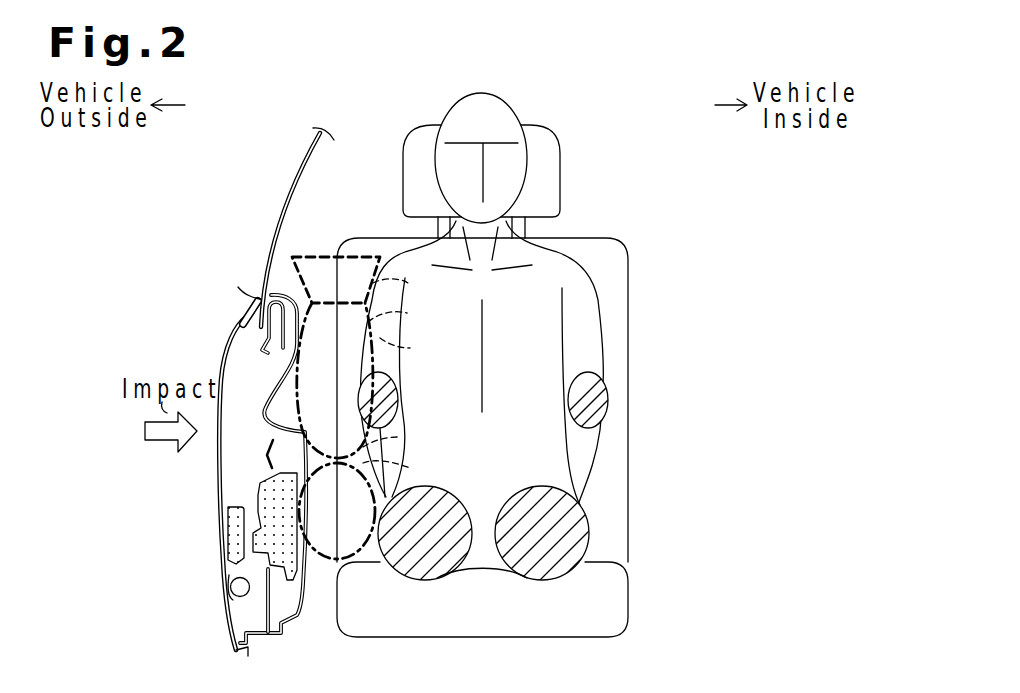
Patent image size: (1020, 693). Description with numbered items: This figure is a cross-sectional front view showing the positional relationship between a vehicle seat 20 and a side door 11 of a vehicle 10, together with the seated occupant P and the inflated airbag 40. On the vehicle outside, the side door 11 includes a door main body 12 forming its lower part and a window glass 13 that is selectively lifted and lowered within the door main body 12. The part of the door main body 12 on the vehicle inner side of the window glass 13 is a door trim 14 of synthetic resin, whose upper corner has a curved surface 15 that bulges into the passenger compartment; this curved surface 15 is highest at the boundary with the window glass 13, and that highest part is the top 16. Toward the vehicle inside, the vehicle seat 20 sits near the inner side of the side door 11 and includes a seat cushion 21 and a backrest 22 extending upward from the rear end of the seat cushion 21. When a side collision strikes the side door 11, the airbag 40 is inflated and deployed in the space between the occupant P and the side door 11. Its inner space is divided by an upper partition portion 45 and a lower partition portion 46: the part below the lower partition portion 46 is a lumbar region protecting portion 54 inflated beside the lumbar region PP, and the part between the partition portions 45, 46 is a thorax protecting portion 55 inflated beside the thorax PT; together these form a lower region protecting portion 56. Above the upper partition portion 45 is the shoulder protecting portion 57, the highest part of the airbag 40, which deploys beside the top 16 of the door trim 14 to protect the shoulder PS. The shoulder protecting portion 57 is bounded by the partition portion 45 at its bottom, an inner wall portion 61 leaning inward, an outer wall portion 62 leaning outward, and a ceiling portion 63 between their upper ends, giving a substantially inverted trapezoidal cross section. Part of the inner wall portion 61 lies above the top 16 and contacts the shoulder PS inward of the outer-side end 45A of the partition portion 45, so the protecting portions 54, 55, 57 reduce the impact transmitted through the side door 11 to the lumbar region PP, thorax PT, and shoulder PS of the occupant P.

The vehicle 10 is at (231, 396).
The side door 11 is at (210, 396).
The door main body 12 is at (220, 476).
The window glass 13 is at (283, 209).
The door trim 14 is at (300, 593).
The curved surface 15 is at (336, 280).
The top 16 is at (292, 290).
The vehicle seat 20 is at (524, 381).
The seat cushion 21 is at (617, 603).
The backrest 22 is at (617, 421).
The airbag 40 is at (385, 408).
The upper partition portion 45 is at (380, 377).
The end of the partition portion on the vehicle outer side 45A is at (335, 380).
The lower partition portion 46 is at (322, 430).
The lumbar region protecting portion 54 is at (410, 468).
The thorax protecting portion 55 is at (398, 437).
The lower region protecting portion 56 is at (442, 441).
The shoulder protecting portion 57 is at (345, 191).
The inner wall portion 61 is at (408, 283).
The outer wall portion 62 is at (268, 260).
The ceiling portion 63 is at (345, 161).
The occupant P is at (522, 112).
The shoulder PS is at (392, 273).
The thorax PT is at (553, 322).
The lumbar region PP is at (560, 492).